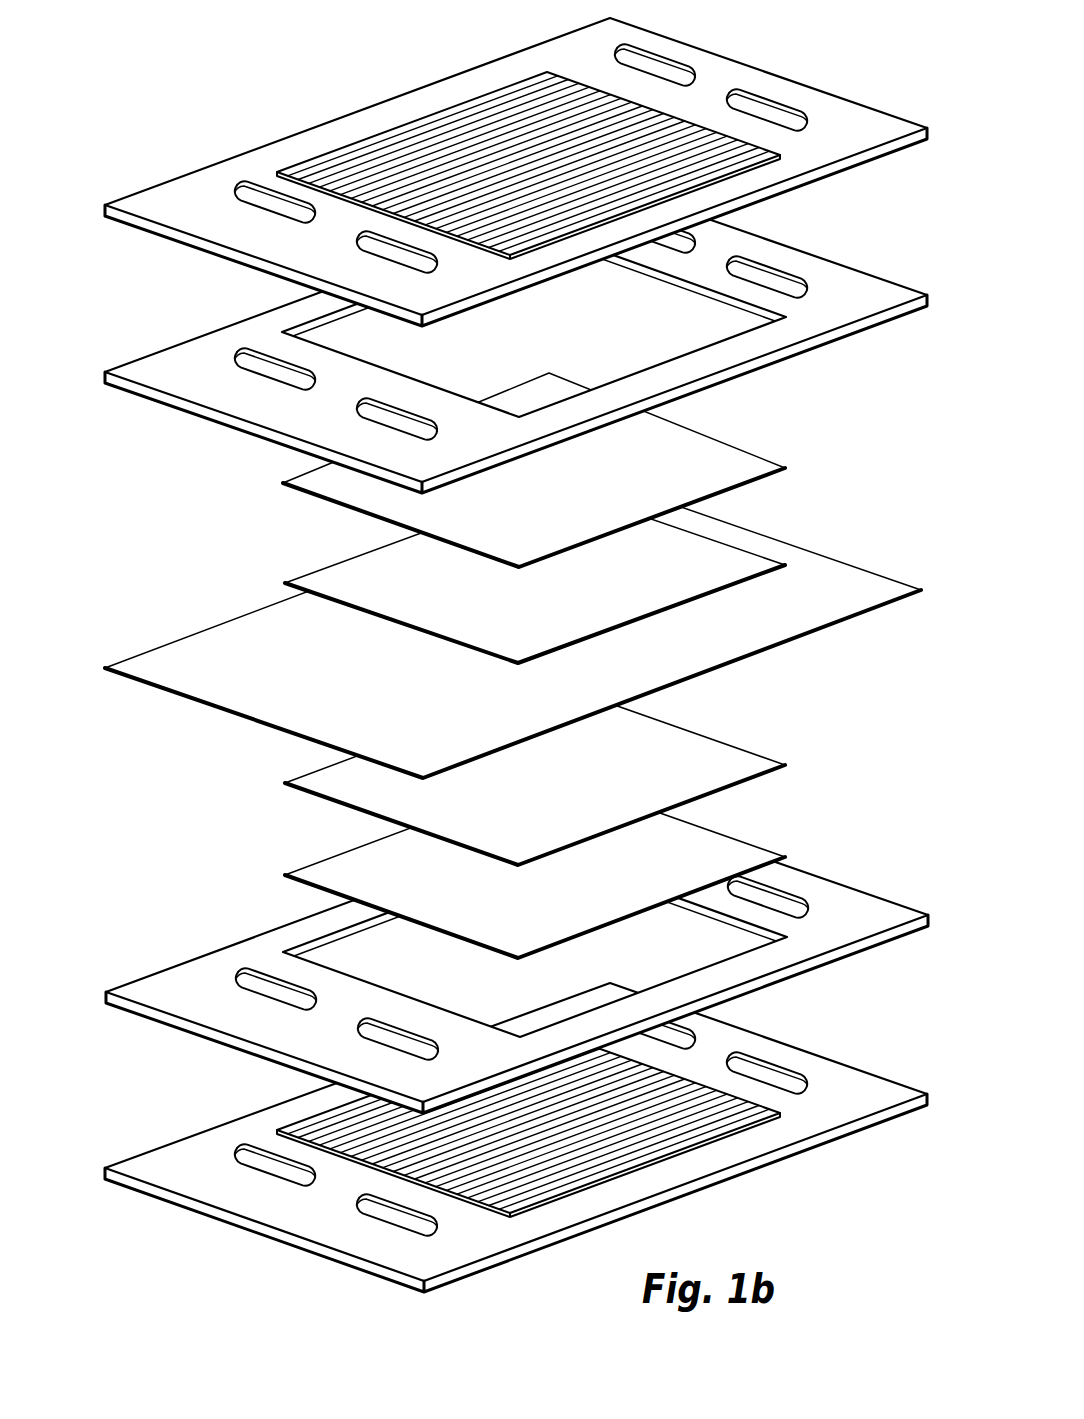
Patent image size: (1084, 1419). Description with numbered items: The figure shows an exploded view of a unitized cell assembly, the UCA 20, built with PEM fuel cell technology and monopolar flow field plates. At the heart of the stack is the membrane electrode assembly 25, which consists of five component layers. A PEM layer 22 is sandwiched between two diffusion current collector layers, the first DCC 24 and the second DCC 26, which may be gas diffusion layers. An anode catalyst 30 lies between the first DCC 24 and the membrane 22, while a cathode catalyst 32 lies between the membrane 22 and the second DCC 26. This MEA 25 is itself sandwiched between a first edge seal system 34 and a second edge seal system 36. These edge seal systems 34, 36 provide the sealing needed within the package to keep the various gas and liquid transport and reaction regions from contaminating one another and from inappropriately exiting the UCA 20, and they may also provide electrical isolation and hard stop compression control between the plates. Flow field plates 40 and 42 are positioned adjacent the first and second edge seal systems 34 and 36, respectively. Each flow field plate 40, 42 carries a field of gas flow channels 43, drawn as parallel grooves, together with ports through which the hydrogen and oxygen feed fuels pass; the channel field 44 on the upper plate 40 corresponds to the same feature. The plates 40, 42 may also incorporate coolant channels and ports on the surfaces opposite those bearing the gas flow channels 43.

The UCA 20 is at (346, 82).
The PEM layer 22 is at (840, 587).
The first DCC 24 is at (747, 467).
The membrane electrode assembly 25 is at (109, 481).
The second DCC 26 is at (748, 848).
The anode catalyst 30 is at (728, 562).
The cathode catalyst 32 is at (747, 767).
The first edge seal system 34 is at (848, 297).
The second edge seal system 36 is at (862, 912).
The flow field plate 40 is at (847, 123).
The flow field plate 42 is at (862, 1086).
The gas flow channels 43 is at (688, 1128).
The flow channels 44 is at (337, 163).